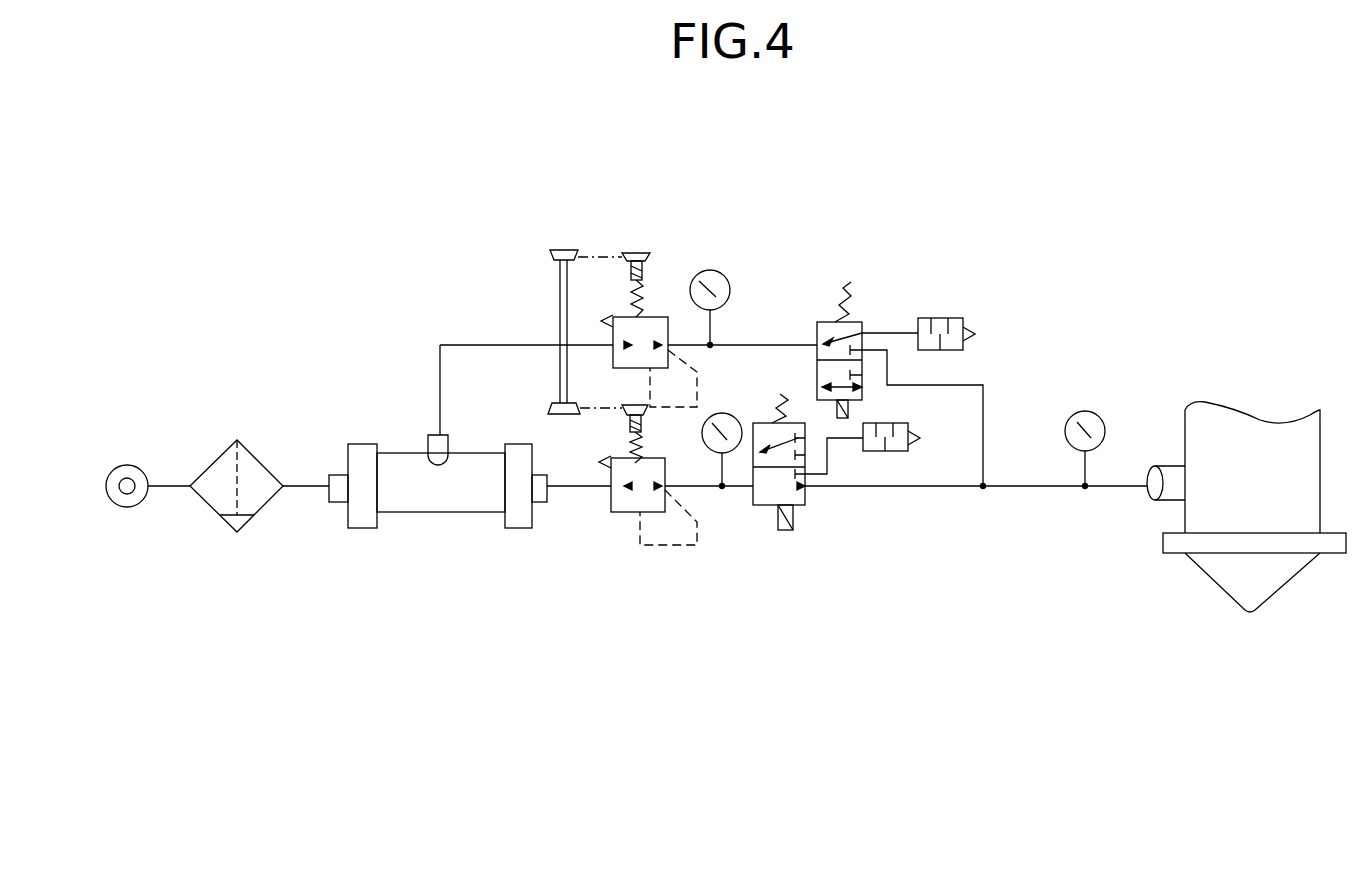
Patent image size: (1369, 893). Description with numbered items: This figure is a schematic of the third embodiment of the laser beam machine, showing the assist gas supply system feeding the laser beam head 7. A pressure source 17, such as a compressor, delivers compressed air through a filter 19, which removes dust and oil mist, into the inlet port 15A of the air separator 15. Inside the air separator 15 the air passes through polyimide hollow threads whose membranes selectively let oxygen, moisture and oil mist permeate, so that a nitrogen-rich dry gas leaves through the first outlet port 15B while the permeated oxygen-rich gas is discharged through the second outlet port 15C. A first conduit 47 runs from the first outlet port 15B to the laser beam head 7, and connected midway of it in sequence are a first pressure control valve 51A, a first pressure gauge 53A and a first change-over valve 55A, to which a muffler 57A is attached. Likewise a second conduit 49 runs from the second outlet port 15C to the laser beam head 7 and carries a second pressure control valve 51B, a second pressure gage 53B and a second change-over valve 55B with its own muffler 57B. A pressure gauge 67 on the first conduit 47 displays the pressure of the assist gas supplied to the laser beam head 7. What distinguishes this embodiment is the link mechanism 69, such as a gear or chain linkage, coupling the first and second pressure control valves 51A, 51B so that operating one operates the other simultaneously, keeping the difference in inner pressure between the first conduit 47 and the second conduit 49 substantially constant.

The laser beam head 7 is at (1310, 492).
The air separator 15 is at (455, 474).
The inlet port 15A is at (337, 497).
The first outlet port 15B is at (540, 500).
The second outlet port 15C is at (428, 448).
The pressure source 17 is at (127, 494).
The filter 19 is at (225, 528).
The first conduit 47 is at (285, 490).
The second conduit 49 is at (940, 385).
The first pressure control valve 51A is at (622, 512).
The second pressure control valve 51B is at (663, 315).
The first pressure gauge 53A is at (728, 455).
The second pressure gage 53B is at (735, 286).
The first change-over valve 55A is at (808, 505).
The second change-over valve 55B is at (858, 322).
The muffler 57A is at (905, 452).
The muffler 57B is at (983, 290).
The pressure gauge 67 is at (1091, 411).
The link mechanism 69 is at (543, 315).